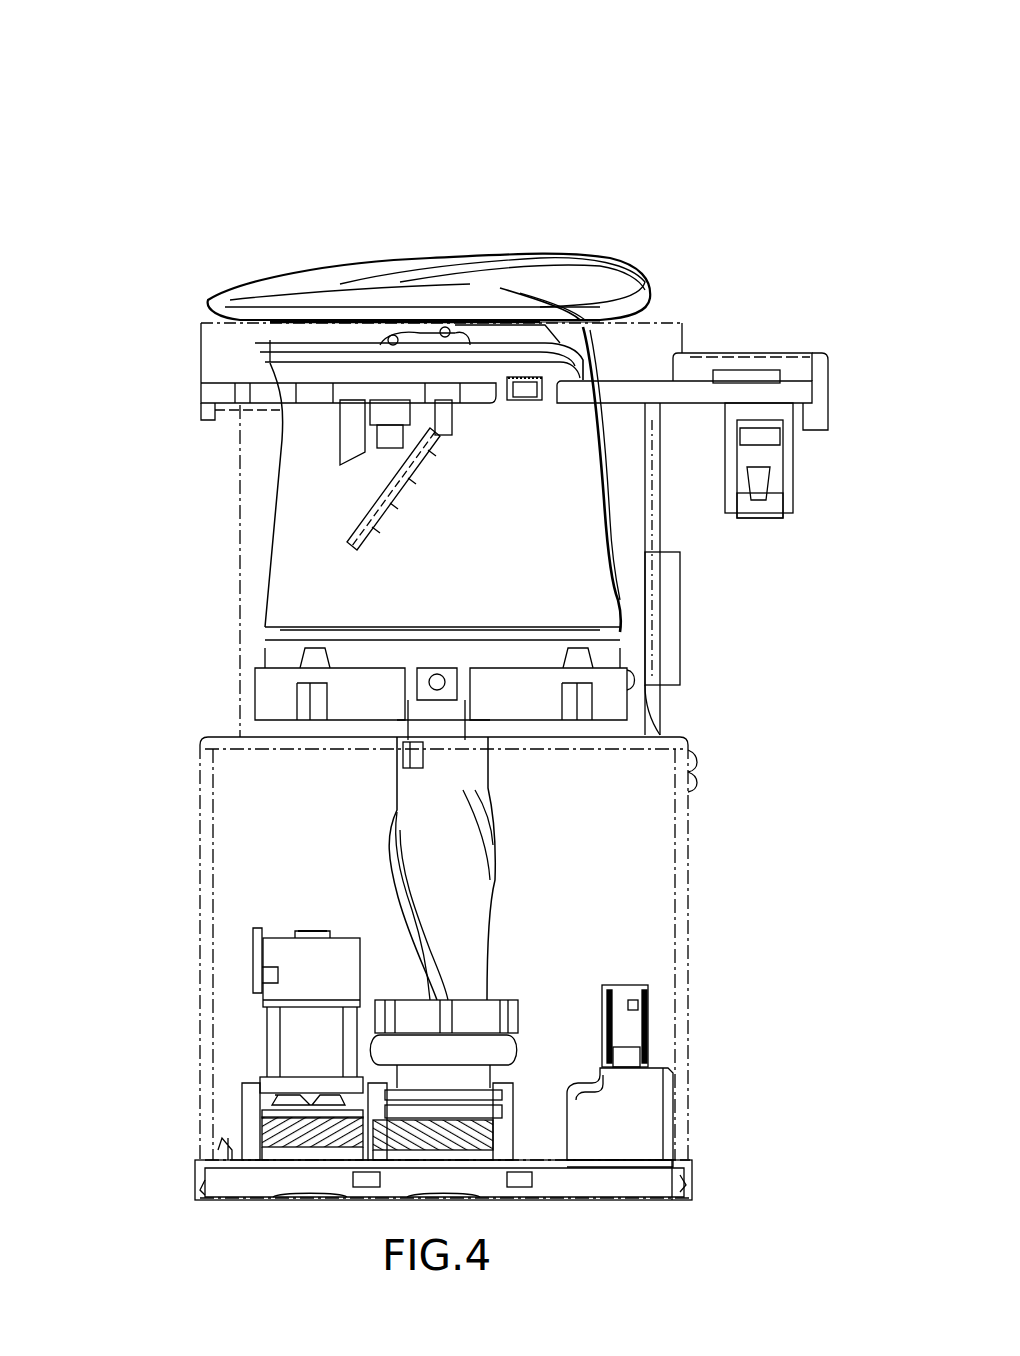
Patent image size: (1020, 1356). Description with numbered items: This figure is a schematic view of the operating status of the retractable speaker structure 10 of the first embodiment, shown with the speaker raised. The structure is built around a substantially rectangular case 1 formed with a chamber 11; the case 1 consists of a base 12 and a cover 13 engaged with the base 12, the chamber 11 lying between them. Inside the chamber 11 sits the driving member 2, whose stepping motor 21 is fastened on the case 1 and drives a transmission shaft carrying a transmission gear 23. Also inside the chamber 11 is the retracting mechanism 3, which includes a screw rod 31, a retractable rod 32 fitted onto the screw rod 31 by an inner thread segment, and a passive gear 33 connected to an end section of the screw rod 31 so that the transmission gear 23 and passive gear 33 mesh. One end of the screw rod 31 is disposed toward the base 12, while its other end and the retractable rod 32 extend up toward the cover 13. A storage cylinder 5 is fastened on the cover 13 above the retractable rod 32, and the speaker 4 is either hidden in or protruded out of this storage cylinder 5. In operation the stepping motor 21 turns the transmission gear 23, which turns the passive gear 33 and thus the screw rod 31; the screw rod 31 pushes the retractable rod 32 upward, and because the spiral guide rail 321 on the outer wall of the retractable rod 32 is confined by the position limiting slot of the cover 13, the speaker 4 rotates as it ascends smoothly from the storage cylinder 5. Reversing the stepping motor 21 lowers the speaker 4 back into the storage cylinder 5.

The retractable speaker structure 10 is at (180, 46).
The case 1 is at (197, 912).
The chamber 11 is at (290, 825).
The base 12 is at (262, 1183).
The cover 13 is at (227, 863).
The driving member 2 is at (250, 1020).
The stepping motor 21 is at (297, 1048).
The transmission gear 23 is at (263, 1130).
The retracting mechanism 3 is at (500, 880).
The screw rod 31 is at (443, 1088).
The retractable rod 32 is at (460, 922).
The spiral guide rail 321 is at (483, 823).
The passive gear 33 is at (480, 1115).
The speaker 4 is at (565, 273).
The storage cylinder 5 is at (248, 527).